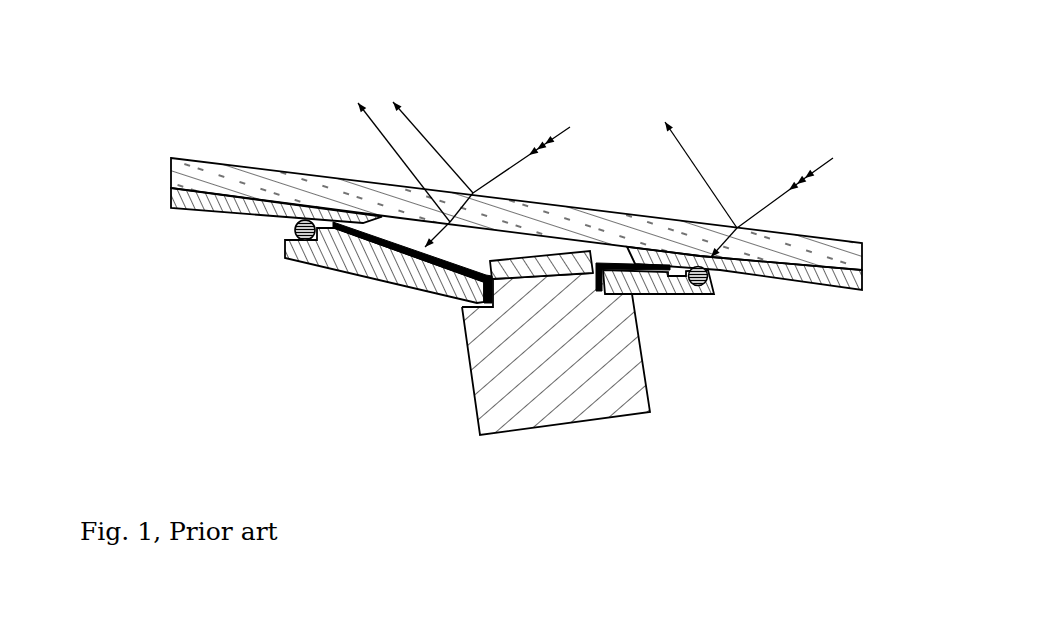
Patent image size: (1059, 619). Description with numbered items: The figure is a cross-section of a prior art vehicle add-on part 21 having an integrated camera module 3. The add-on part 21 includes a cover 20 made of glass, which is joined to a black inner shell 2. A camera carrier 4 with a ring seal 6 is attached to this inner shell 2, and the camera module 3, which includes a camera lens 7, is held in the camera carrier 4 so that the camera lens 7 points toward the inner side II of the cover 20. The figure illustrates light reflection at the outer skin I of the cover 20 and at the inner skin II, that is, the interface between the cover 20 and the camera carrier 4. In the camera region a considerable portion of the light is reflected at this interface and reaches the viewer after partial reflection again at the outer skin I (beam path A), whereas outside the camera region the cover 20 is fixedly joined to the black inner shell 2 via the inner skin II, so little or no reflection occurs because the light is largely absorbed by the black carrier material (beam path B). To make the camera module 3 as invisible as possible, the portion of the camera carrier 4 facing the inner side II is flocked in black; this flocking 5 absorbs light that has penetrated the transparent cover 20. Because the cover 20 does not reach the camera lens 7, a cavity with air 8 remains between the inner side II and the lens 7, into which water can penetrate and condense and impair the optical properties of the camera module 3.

The vehicle add-on part 21 is at (128, 127).
The cover 20 is at (239, 179).
The inner shell 2 is at (171, 203).
The camera module 3 is at (557, 317).
The camera lens 7 is at (514, 265).
The camera carrier 4 is at (437, 290).
The flocking 5 is at (420, 259).
The O-ring seal 6 is at (303, 233).
The cavity with air 8 is at (518, 249).
The outer skin I is at (282, 172).
The inner skin II is at (397, 226).